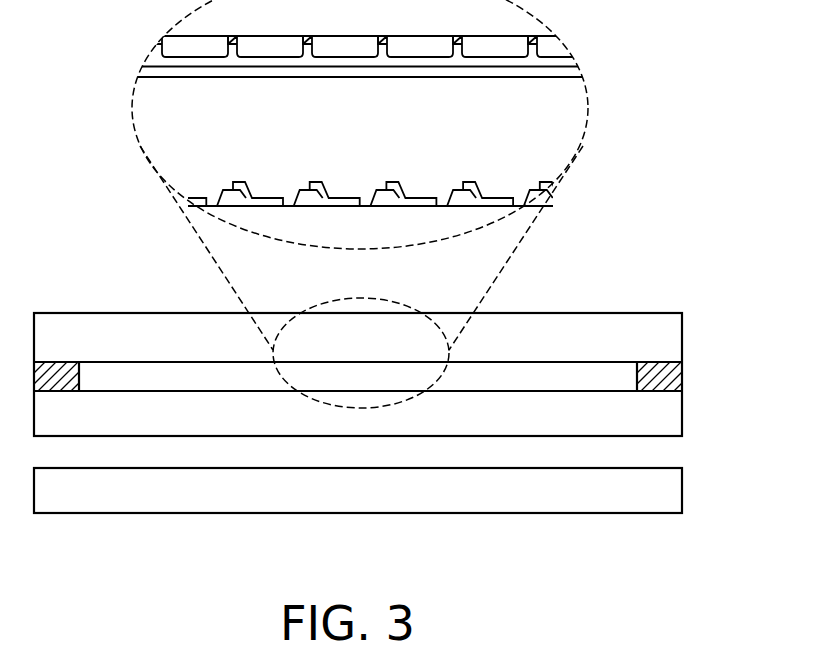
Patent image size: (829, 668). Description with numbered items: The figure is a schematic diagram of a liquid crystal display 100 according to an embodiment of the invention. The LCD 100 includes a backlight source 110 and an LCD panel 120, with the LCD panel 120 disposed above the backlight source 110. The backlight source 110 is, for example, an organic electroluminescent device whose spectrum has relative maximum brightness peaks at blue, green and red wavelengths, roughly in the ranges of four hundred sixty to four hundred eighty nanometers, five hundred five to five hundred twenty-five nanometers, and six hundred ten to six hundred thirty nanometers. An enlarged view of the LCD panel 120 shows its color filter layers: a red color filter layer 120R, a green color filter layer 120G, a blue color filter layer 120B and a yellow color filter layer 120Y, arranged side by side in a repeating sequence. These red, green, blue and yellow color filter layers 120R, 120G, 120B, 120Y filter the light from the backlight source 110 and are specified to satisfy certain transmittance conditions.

The liquid crystal display 100 is at (376, 429).
The backlight source 110 is at (693, 468).
The LCD panel 120 is at (693, 313).
The red color filter layer 120R is at (378, 46).
The green color filter layer 120G is at (265, 46).
The blue color filter layer 120B is at (340, 46).
The yellow color filter layer 120Y is at (415, 46).